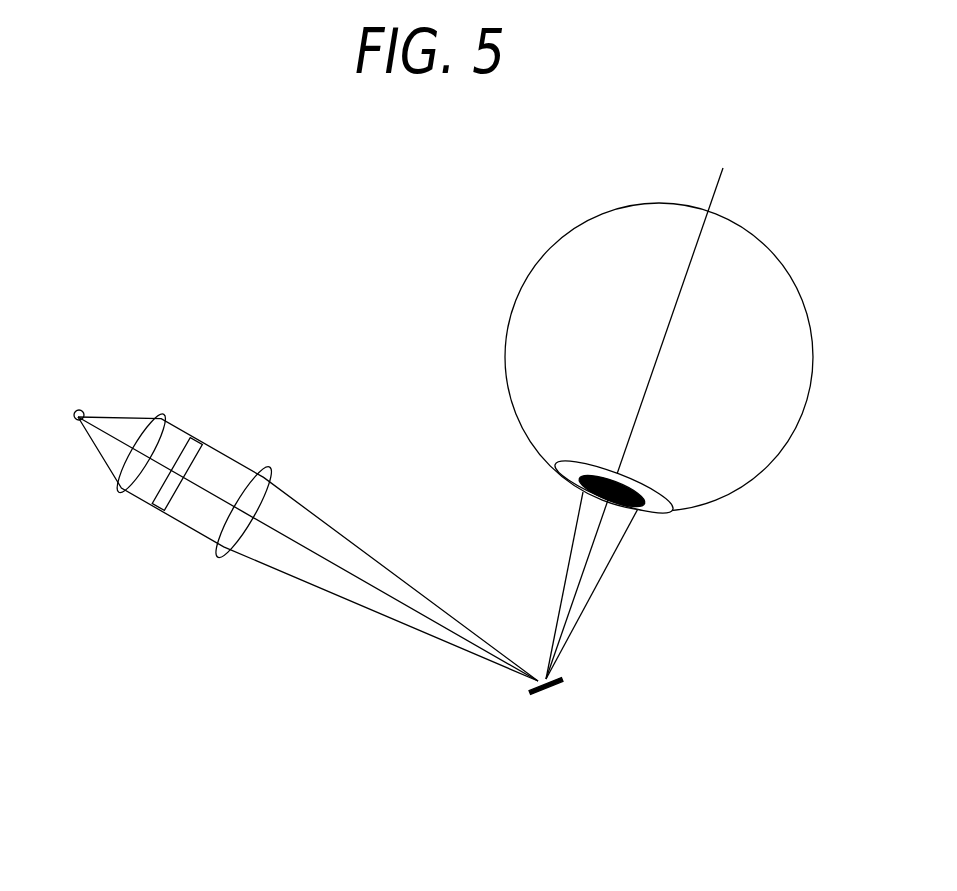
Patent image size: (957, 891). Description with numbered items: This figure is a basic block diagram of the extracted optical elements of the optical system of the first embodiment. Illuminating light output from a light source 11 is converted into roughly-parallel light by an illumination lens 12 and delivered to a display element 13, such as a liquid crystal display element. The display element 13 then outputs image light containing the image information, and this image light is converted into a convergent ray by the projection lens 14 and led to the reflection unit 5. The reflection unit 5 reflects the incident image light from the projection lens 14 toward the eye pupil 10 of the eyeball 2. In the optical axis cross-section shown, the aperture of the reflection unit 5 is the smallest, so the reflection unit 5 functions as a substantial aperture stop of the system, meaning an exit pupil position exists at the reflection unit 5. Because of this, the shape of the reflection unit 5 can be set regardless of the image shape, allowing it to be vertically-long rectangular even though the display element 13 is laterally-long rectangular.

The eyeball 2 is at (760, 477).
The reflection unit 5 is at (562, 683).
The eye pupil 10 is at (640, 510).
The light source 11 is at (82, 410).
The illumination lens 12 is at (164, 413).
The display element 13 is at (160, 505).
The projection lens 14 is at (222, 556).